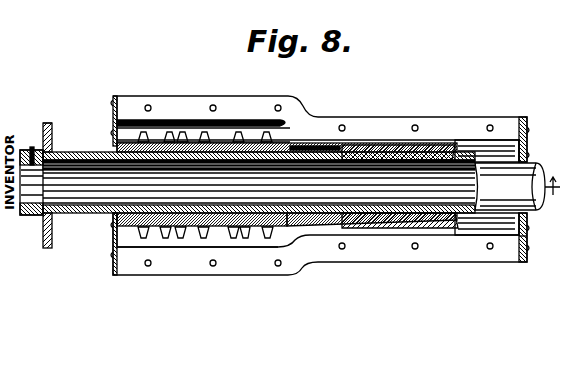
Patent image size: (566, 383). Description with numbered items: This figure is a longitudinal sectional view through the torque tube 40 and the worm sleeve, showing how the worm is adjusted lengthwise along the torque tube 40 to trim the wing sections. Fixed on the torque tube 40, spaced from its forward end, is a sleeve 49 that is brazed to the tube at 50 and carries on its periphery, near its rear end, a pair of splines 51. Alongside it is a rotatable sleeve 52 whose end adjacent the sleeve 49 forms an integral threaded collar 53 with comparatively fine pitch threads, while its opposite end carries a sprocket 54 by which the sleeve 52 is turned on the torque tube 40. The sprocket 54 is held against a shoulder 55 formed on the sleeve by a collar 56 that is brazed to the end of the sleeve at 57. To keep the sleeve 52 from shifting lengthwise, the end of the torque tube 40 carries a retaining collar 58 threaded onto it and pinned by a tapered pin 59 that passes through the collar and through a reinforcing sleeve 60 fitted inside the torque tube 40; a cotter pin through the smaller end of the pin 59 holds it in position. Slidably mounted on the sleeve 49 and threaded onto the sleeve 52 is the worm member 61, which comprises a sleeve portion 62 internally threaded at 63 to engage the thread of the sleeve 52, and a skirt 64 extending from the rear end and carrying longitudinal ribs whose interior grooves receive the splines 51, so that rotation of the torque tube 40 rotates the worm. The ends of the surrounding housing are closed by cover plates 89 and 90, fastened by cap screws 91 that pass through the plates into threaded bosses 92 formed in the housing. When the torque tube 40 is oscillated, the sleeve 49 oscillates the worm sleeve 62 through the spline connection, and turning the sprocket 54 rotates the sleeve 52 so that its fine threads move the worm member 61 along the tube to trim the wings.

The tube 40 is at (528, 178).
The sleeve 49 is at (332, 160).
The brazed joint 50 is at (460, 135).
The splines 51 is at (396, 150).
The sleeve 52 is at (113, 226).
The threaded collar 53 is at (190, 232).
The sprocket 54 is at (54, 126).
The shoulder 55 is at (58, 153).
The collar 56 is at (45, 125).
The brazed joint 57 is at (46, 240).
The retaining collar 58 is at (30, 214).
The tapered pin 59 is at (31, 147).
The reinforcing sleeve 60 is at (44, 197).
The worm member 61 is at (300, 116).
The sleeve portion 62 is at (224, 152).
The internal threads 63 is at (165, 130).
The skirt 64 is at (322, 238).
The cover plate 89 is at (112, 254).
The cover plate 90 is at (528, 237).
The cap screws 91 is at (112, 262).
The threaded bosses 92 is at (555, 186).